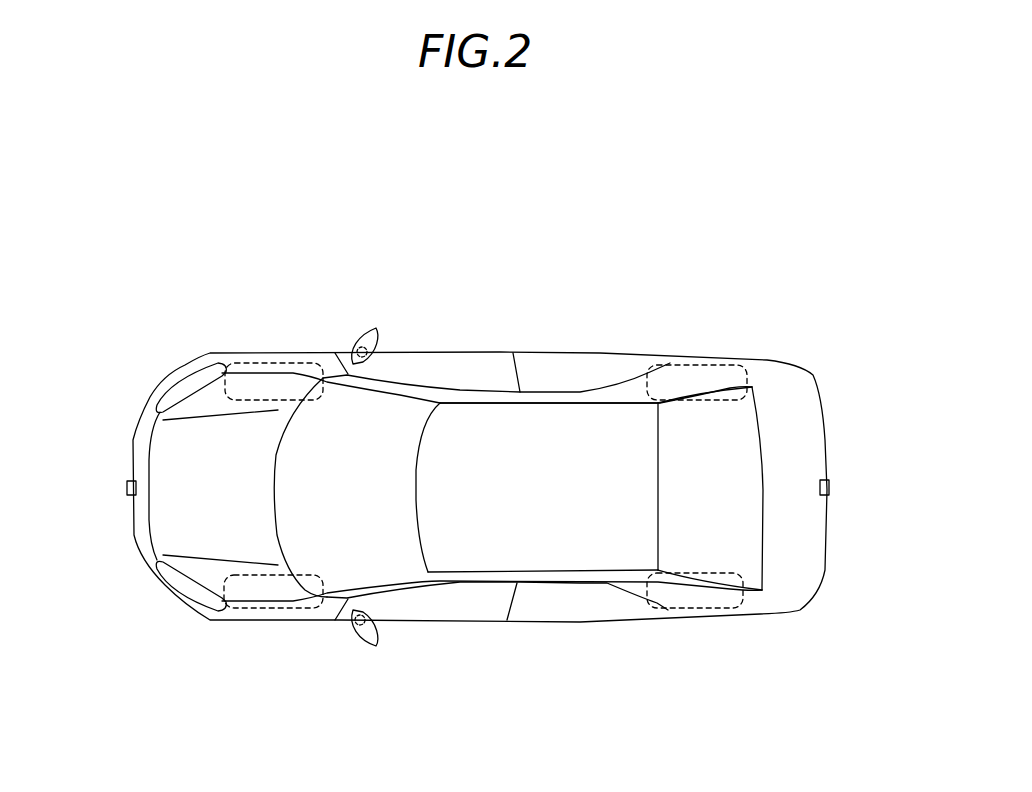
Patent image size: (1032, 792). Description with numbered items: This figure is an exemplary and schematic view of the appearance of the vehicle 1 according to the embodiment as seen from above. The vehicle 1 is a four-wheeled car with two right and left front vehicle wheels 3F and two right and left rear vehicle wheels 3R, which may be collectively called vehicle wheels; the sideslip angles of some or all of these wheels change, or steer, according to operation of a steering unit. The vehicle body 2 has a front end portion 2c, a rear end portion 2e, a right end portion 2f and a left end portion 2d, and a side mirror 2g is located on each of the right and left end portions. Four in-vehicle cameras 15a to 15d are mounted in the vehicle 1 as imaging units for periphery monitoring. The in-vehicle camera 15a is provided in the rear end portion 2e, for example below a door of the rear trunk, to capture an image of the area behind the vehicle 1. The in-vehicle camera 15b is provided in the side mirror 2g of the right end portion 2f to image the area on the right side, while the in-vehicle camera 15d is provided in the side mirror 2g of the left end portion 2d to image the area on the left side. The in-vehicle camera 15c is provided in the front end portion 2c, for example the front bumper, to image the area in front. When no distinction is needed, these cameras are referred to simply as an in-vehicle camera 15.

The vehicle 1 is at (469, 469).
The vehicle body 2 is at (478, 503).
The front end portion 2c is at (133, 523).
The left end portion 2d is at (582, 621).
The rear end portion 2e is at (830, 507).
The right end portion 2f is at (597, 353).
The side mirror 2g is at (378, 335).
The front vehicle wheels 3F is at (272, 353).
The rear vehicle wheels 3R is at (688, 355).
The in-vehicle camera 15 is at (469, 501).
The in-vehicle camera 15a is at (127, 487).
The in-vehicle camera 15b is at (829, 487).
The in-vehicle camera 15c is at (358, 640).
The in-vehicle camera 15d is at (359, 340).